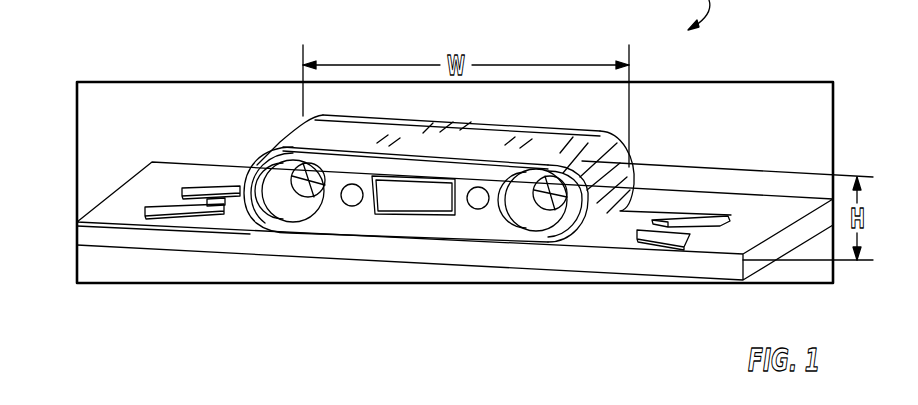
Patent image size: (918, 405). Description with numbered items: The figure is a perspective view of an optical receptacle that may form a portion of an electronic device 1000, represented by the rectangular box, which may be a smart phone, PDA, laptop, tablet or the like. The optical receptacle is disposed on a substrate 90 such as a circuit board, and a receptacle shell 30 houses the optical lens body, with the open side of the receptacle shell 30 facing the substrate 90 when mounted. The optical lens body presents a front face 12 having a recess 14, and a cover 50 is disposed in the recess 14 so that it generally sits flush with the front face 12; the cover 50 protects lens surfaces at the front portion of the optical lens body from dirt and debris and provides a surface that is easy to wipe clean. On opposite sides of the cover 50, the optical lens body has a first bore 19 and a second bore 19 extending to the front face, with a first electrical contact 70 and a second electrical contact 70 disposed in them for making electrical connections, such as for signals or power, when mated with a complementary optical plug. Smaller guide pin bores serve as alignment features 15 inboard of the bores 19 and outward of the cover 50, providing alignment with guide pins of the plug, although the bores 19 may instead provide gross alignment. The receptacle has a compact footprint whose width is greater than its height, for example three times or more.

The electronic device 1000 is at (762, 82).
The substrate 90 is at (88, 232).
The receptacle shell 30 is at (250, 165).
The front face 12 is at (340, 231).
The bore 19 is at (278, 226).
The electrical contact 70 is at (296, 168).
The alignment feature 15 is at (352, 206).
The recess 14 is at (395, 224).
The cover 50 is at (420, 200).